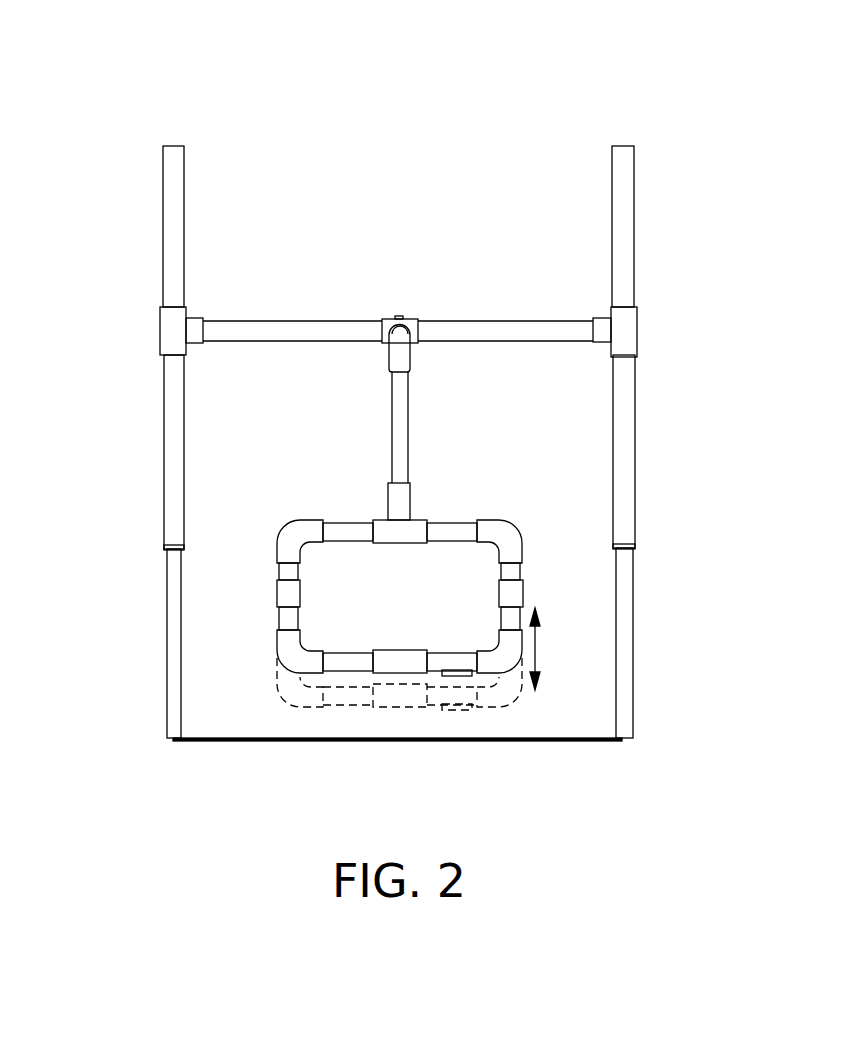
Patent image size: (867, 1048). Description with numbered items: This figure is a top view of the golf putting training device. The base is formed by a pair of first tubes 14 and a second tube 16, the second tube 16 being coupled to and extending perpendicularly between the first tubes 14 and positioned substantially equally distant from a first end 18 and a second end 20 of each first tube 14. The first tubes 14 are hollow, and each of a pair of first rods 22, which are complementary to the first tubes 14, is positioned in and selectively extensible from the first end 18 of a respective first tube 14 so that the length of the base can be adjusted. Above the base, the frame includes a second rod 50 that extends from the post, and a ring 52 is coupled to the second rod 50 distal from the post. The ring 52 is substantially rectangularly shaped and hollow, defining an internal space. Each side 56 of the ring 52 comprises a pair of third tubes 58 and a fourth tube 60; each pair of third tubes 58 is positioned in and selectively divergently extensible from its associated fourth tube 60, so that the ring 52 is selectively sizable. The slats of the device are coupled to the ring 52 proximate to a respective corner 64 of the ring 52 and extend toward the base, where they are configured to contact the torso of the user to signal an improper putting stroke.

The first tube 14 is at (167, 422).
The second tube 16 is at (323, 328).
The first end 18 is at (172, 545).
The second end 20 is at (173, 146).
The first rod 22 is at (172, 618).
The second rod 50 is at (400, 410).
The ring 52 is at (431, 446).
The side 56 is at (288, 597).
The third tube 58 is at (512, 622).
The fourth tube 60 is at (398, 660).
The corner 64 is at (293, 538).